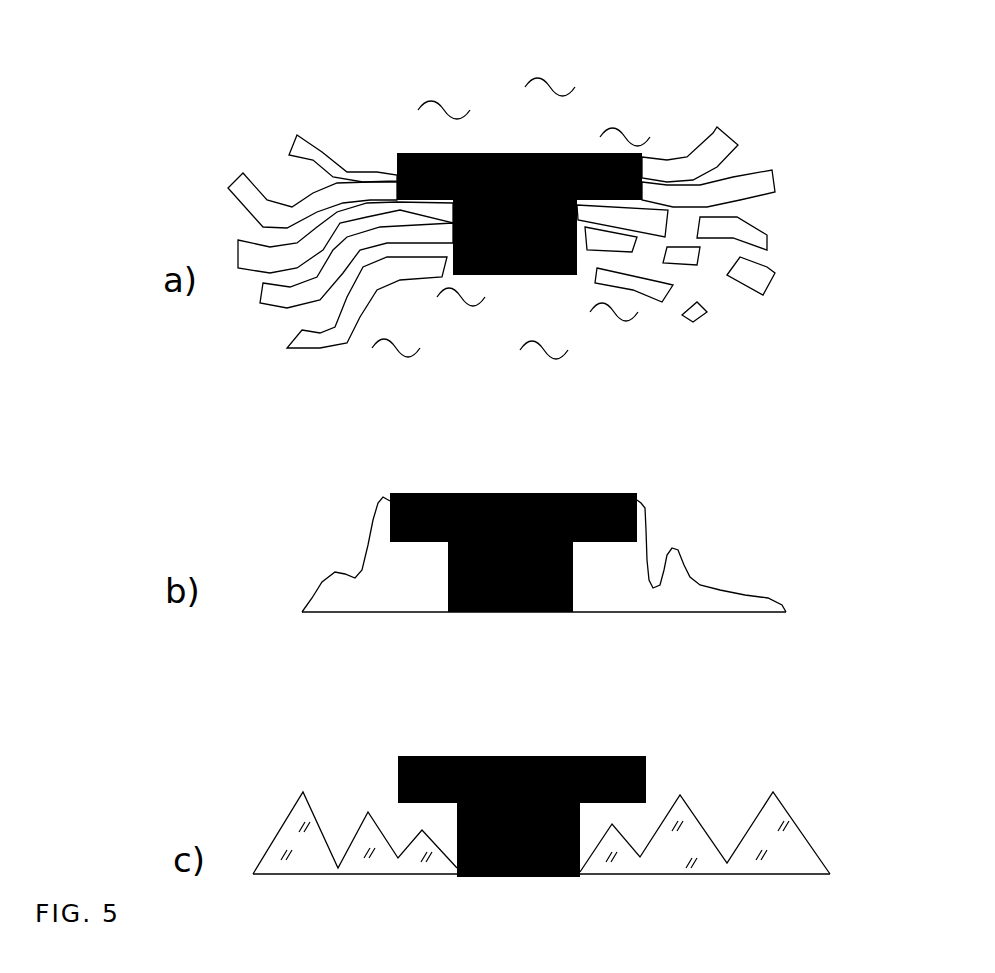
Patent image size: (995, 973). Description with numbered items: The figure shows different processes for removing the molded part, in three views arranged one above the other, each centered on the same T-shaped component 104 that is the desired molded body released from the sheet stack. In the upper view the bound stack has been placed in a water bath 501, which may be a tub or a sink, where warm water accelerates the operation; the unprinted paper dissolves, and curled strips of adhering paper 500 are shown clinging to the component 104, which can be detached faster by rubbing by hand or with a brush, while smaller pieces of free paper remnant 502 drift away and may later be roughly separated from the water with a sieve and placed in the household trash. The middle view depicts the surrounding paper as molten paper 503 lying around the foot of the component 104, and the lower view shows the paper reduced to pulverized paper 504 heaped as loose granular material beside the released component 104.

The component 104 is at (538, 282).
The adhering paper 500 is at (375, 165).
The water bath 501 is at (592, 121).
The free paper remnant 502 is at (705, 315).
The molten paper 503 is at (697, 604).
The pulverized paper 504 is at (683, 845).